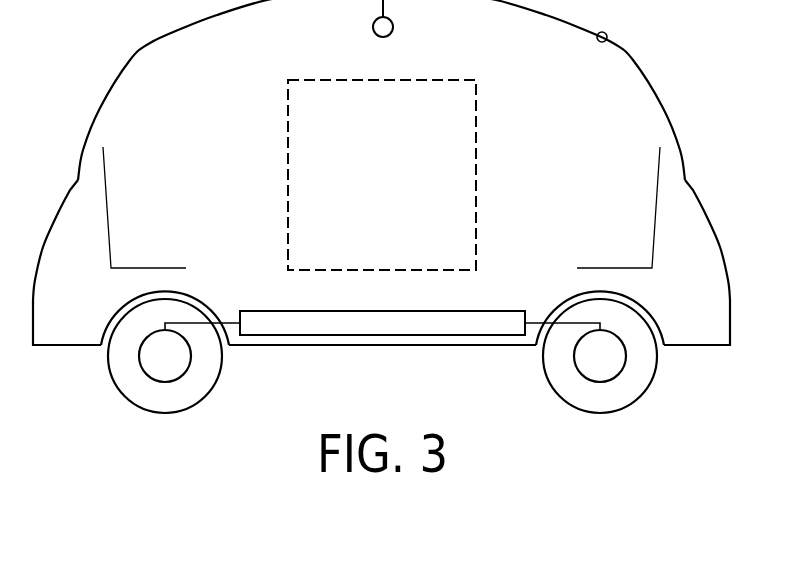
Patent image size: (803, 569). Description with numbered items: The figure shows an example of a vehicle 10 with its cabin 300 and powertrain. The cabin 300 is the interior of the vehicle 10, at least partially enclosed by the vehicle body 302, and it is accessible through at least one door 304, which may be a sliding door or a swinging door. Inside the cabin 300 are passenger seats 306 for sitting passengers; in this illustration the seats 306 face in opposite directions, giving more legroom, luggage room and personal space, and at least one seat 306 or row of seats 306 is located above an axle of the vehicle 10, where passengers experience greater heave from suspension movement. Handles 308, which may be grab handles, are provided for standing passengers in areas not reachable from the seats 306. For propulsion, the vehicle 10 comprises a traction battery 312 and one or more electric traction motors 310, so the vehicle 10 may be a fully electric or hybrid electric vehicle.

The vehicle 10 is at (694, 345).
The cabin 300 is at (381, 210).
The vehicle body 302 is at (607, 38).
The door 304 is at (287, 114).
The passenger seat 306 is at (106, 172).
The handle 308 is at (381, 3).
The electric traction motor 310 is at (190, 367).
The traction battery 312 is at (258, 311).